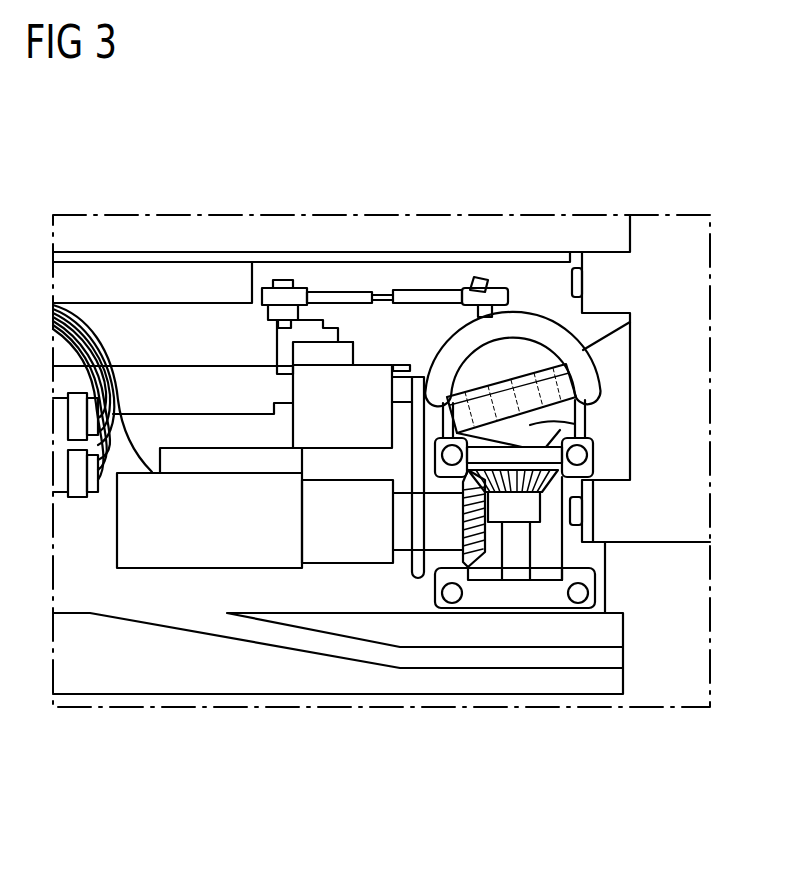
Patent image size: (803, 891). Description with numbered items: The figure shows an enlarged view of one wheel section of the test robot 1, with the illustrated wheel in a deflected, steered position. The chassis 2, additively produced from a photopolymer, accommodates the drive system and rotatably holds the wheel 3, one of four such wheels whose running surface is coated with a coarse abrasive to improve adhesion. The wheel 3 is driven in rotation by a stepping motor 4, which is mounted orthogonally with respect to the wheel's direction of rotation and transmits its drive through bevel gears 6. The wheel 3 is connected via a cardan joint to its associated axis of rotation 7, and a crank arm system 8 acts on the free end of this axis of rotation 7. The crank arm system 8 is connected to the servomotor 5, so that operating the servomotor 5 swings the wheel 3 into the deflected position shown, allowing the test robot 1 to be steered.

The test robot 1 is at (625, 160).
The chassis 2 is at (193, 384).
The wheel 3 is at (523, 393).
The stepping motor 4 is at (178, 550).
The servomotor 5 is at (372, 385).
The bevel gear 6 is at (521, 545).
The axis of rotation 7 is at (565, 422).
The crank arm system 8 is at (325, 297).